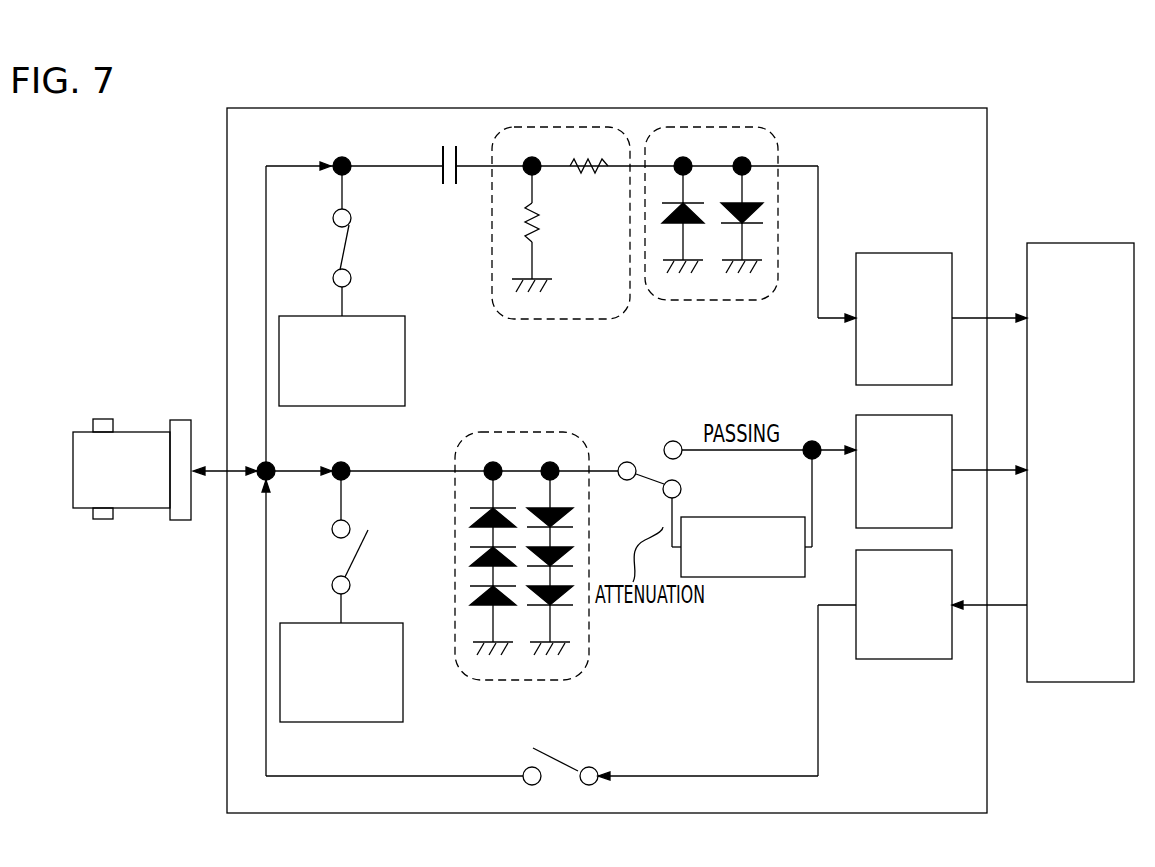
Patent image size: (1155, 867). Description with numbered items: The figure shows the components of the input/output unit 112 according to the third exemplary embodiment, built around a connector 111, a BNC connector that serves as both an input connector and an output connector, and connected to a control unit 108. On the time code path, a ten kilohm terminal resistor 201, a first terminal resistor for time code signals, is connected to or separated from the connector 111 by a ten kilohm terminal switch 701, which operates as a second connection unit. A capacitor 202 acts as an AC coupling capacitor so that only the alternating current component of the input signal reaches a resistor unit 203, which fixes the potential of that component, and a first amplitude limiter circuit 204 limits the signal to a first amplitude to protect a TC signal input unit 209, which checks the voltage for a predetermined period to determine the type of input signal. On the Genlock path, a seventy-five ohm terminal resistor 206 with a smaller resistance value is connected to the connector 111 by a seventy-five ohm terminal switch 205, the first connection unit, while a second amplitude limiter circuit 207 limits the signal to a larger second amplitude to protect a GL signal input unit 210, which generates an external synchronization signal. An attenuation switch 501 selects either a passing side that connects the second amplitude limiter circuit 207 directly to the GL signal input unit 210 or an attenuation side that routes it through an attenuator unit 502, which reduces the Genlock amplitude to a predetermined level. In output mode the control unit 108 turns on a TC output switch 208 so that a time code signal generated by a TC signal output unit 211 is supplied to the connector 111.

The input/output unit 112 is at (952, 108).
The control unit 108 is at (1073, 243).
The connector 111 is at (128, 425).
The 10 kΩ terminal switch 701 is at (356, 248).
The 10 kΩ terminal resistor 201 is at (345, 406).
The capacitor 202 is at (452, 186).
The resistor unit 203 is at (629, 313).
The first amplitude limiter circuit 204 is at (710, 300).
The 75Ω terminal switch 205 is at (364, 562).
The 75Ω terminal resistor 206 is at (297, 621).
The second amplitude limiter circuit 207 is at (527, 432).
The TC output switch 208 is at (567, 751).
The TC signal input unit 209 is at (902, 253).
The GL signal input unit 210 is at (853, 440).
The TC signal output unit 211 is at (905, 659).
The attenuation (ATT) switch 501 is at (655, 440).
The attenuator unit 502 is at (745, 577).